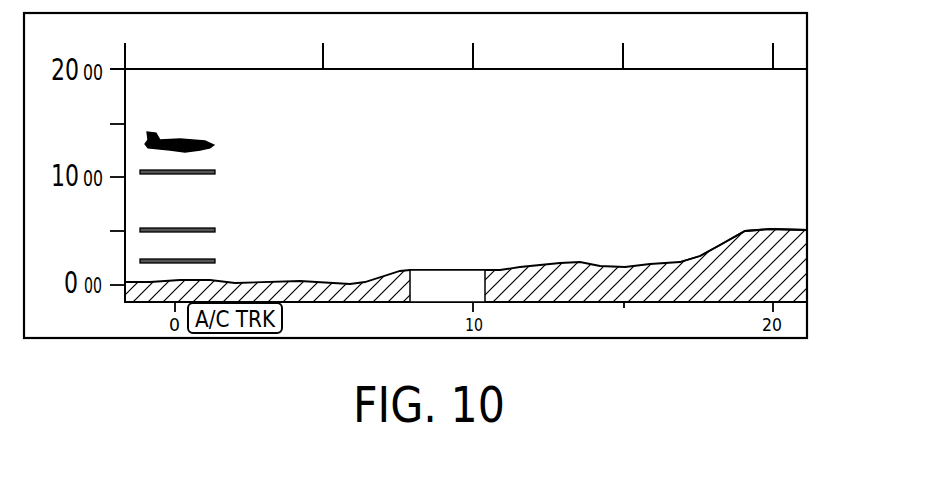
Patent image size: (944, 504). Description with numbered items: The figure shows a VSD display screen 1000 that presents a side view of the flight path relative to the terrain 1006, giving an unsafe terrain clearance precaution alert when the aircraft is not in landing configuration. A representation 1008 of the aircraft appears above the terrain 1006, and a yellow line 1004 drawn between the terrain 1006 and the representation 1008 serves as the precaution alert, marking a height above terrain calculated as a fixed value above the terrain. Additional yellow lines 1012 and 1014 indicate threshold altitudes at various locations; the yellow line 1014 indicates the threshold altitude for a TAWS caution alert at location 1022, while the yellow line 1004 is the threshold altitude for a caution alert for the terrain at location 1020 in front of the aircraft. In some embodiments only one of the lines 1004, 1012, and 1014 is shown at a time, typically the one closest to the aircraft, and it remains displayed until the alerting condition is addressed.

The VSD display screen 1000 is at (808, 115).
The yellow line 1004 is at (200, 171).
The terrain 1006 is at (790, 258).
The representation of the aircraft 1008 is at (192, 142).
The yellow line 1012 is at (186, 228).
The yellow line 1014 is at (199, 261).
The location 1020 is at (780, 222).
The location 1022 is at (138, 277).